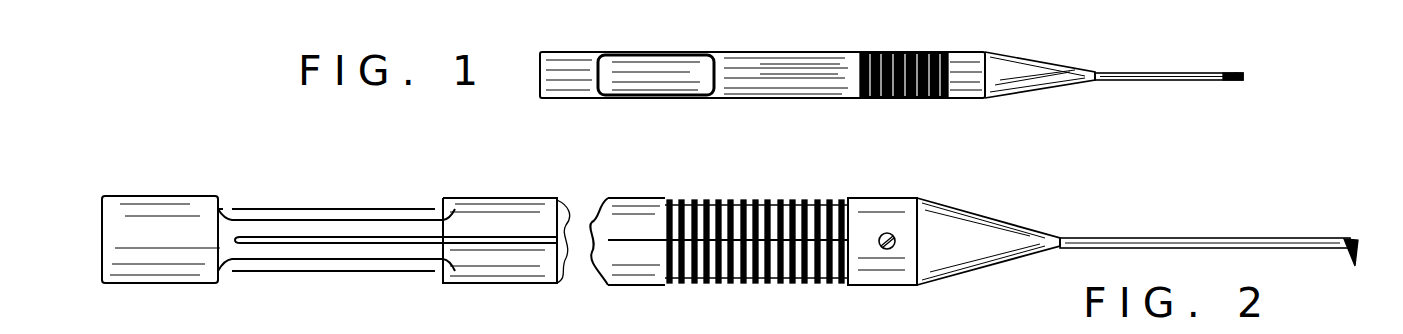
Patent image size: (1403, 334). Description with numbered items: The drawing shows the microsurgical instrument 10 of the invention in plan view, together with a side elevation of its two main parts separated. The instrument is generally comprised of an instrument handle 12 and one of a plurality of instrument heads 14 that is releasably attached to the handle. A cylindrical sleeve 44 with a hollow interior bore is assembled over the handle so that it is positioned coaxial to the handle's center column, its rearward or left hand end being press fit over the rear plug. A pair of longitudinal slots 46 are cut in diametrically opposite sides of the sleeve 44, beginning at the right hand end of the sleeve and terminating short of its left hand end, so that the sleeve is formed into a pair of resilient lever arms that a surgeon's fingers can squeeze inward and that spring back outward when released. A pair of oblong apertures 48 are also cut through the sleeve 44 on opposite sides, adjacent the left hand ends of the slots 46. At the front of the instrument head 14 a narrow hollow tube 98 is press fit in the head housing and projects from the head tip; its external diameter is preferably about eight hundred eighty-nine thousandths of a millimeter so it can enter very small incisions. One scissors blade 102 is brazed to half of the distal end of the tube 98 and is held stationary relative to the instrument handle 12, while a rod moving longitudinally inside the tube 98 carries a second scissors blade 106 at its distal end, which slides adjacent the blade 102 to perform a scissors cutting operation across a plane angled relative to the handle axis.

In FIG. 1, the microsurgical instrument 10 is at (879, 108).
In FIG. 2, the microsurgical instrument 10 is at (300, 157).
In FIG. 1, the instrument handle 12 is at (757, 84).
In FIG. 2, the instrument handle 12 is at (463, 212).
In FIG. 1, the instrument head 14 is at (1016, 80).
In FIG. 2, the instrument head 14 is at (948, 232).
In FIG. 1, the cylindrical sleeve 44 is at (833, 82).
In FIG. 2, the cylindrical sleeve 44 is at (510, 265).
In FIG. 2, the longitudinal slots 46 is at (483, 246).
In FIG. 1, the oblong apertures 48 is at (650, 82).
In FIG. 2, the oblong apertures 48 is at (305, 203).
In FIG. 1, the narrow hollow tube 98 is at (1152, 70).
In FIG. 1, the scissors blade 102 is at (1223, 70).
In FIG. 1, the second scissors blade 106 is at (1240, 83).